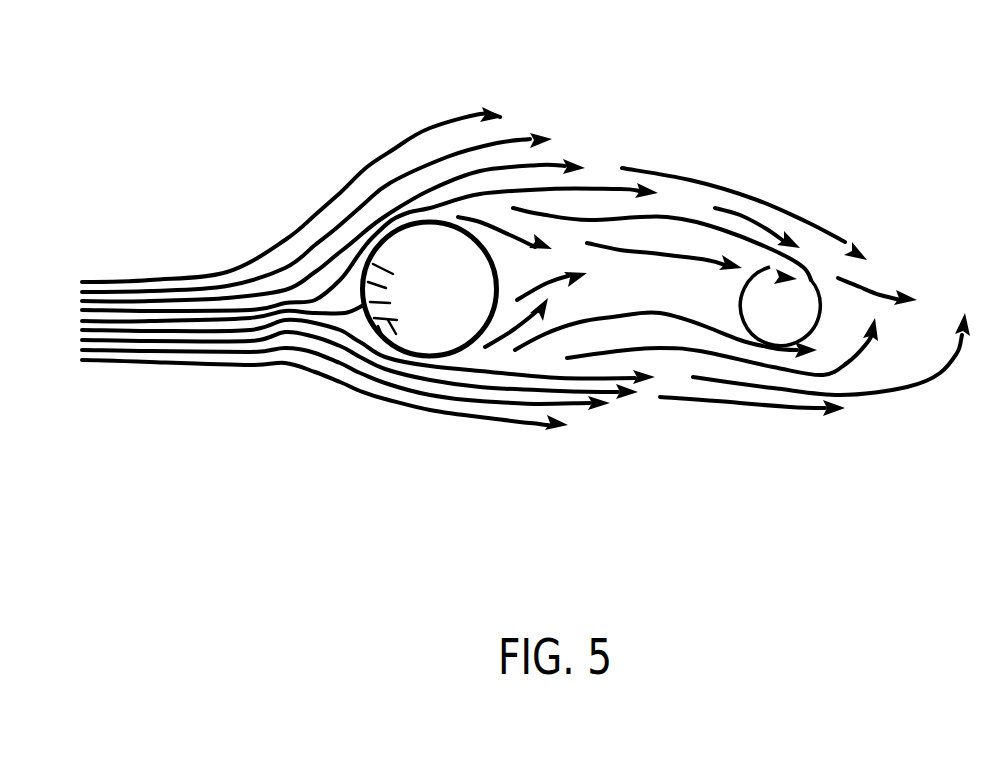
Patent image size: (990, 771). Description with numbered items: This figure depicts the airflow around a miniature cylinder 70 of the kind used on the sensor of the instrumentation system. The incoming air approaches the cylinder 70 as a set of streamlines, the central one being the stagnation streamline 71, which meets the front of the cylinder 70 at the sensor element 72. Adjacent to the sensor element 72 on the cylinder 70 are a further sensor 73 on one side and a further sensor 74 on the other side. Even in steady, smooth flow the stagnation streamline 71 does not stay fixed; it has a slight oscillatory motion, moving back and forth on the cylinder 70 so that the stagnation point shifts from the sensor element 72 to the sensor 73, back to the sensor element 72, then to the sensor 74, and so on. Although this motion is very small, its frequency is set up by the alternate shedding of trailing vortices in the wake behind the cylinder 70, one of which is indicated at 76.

The cylinder 70 is at (405, 211).
The stagnation streamline 71 is at (370, 303).
The sensor element 72 is at (304, 210).
The sensor 73 is at (312, 152).
The sensor 74 is at (283, 459).
The vortex 76 is at (864, 199).